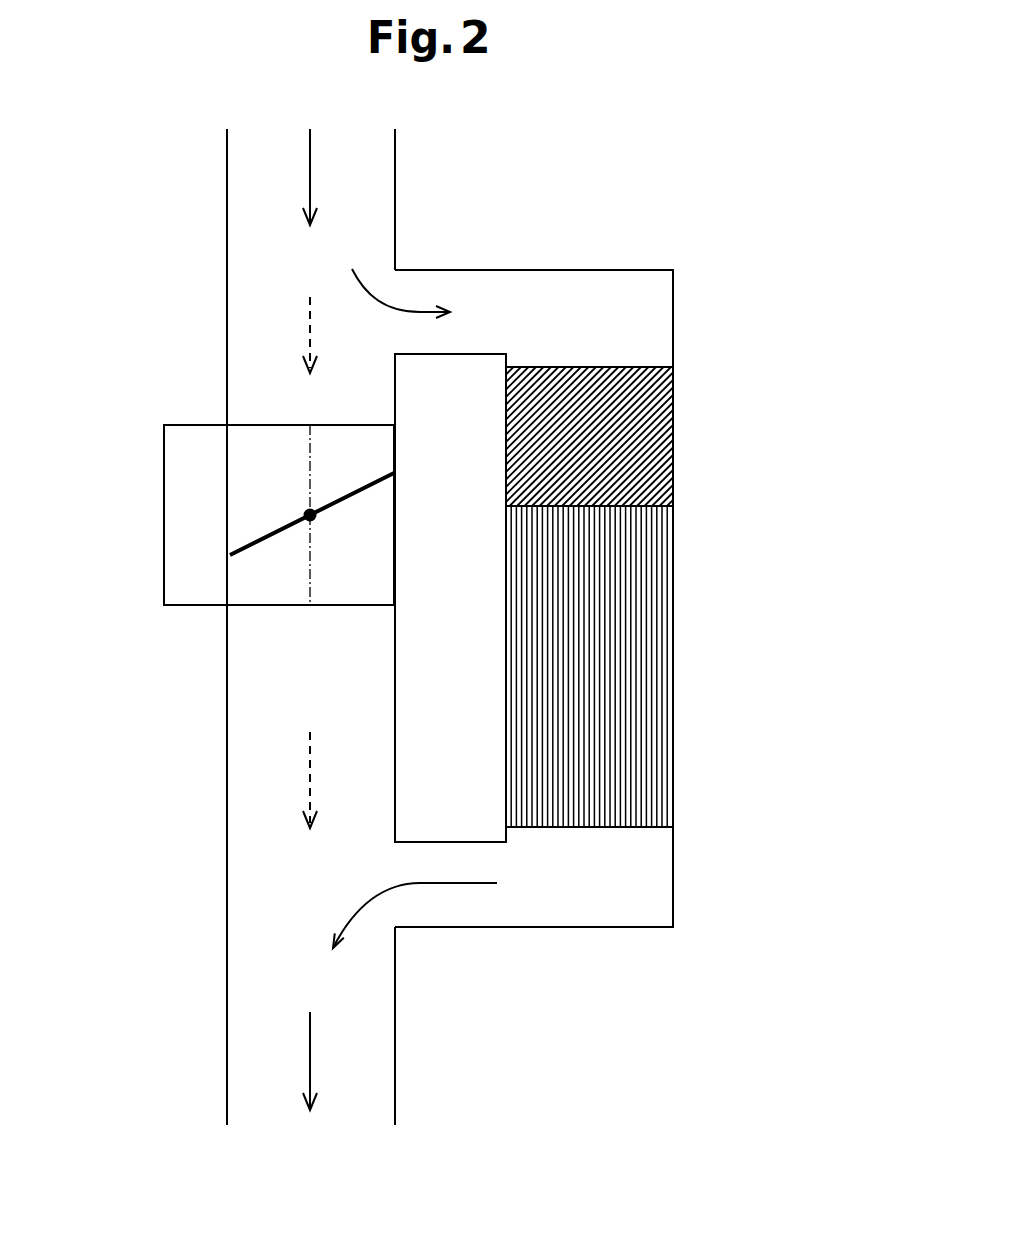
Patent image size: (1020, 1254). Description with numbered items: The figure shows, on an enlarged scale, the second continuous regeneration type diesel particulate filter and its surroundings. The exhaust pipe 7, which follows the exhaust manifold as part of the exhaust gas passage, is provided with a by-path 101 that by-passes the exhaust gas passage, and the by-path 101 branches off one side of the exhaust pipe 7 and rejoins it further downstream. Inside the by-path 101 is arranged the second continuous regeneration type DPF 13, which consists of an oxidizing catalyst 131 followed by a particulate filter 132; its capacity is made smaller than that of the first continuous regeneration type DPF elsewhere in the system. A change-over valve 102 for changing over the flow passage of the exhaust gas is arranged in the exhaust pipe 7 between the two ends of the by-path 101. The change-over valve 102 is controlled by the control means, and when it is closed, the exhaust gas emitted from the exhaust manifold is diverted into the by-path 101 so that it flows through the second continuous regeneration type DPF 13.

The exhaust pipe 7 is at (377, 1050).
The second continuous regeneration type DPF 13 is at (625, 625).
The by-path 101 is at (517, 277).
The change-over valve 102 is at (164, 572).
The oxidizing catalyst 131 is at (658, 432).
The particulate filter 132 is at (658, 677).